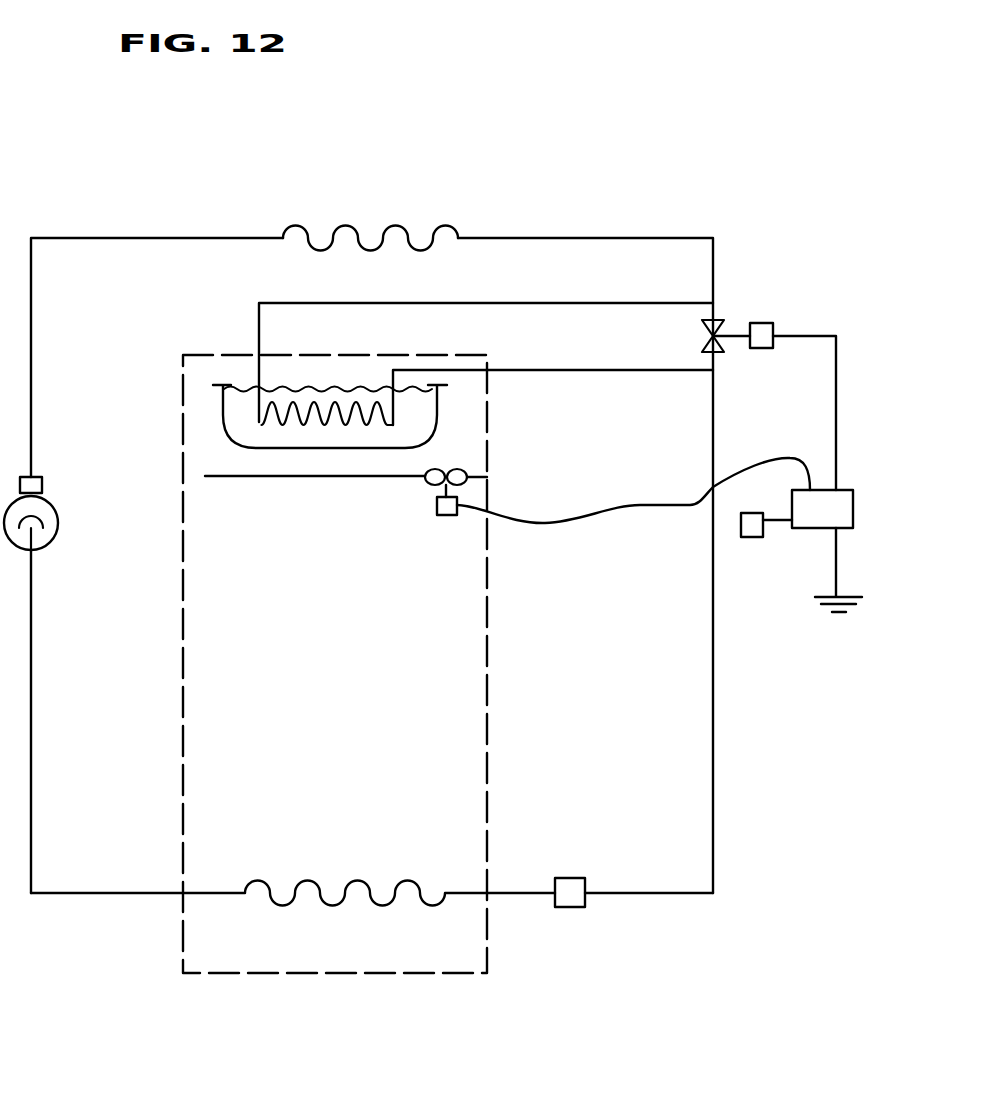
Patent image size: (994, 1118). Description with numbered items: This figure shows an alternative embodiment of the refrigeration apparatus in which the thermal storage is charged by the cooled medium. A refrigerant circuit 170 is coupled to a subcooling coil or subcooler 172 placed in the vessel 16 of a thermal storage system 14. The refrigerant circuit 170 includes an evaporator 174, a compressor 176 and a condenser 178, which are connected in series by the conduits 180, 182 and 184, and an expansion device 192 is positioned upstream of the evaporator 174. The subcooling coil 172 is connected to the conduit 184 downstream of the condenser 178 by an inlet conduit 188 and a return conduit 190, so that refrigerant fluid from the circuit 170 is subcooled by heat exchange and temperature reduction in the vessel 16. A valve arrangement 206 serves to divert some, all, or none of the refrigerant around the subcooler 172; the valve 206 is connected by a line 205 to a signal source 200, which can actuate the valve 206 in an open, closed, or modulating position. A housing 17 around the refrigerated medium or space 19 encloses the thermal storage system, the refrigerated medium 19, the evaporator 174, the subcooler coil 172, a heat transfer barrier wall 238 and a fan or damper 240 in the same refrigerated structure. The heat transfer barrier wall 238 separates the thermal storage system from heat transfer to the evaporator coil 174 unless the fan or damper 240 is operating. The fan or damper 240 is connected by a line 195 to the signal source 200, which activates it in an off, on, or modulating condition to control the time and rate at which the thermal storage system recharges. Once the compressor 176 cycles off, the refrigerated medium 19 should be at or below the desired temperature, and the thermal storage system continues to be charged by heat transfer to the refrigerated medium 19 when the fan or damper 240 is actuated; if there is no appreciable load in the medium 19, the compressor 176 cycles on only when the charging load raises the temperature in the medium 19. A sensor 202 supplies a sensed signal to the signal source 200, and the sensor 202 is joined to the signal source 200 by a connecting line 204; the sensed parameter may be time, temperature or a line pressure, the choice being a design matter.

The thermal storage system 14 is at (378, 451).
The vessel 16 is at (234, 432).
The housing 17 is at (487, 656).
The refrigerated medium 19 is at (452, 697).
The refrigerant circuit 170 is at (33, 696).
The subcooling coil 172 is at (404, 425).
The evaporator 174 is at (312, 882).
The compressor 176 is at (57, 542).
The condenser 178 is at (350, 228).
The conduit 180 is at (33, 780).
The conduit 182 is at (168, 238).
The conduit 184 is at (656, 238).
The inlet conduit 188 is at (535, 302).
The return conduit 190 is at (547, 370).
The expansion device 192 is at (714, 442).
The line 195 is at (535, 520).
The signal source 200 is at (848, 510).
The sensor 202 is at (752, 539).
The conductor 204 is at (777, 522).
The line 205 is at (800, 323).
The valve arrangement 206 is at (720, 322).
The heat transfer barrier wall 238 is at (275, 479).
The fan or damper 240 is at (437, 505).